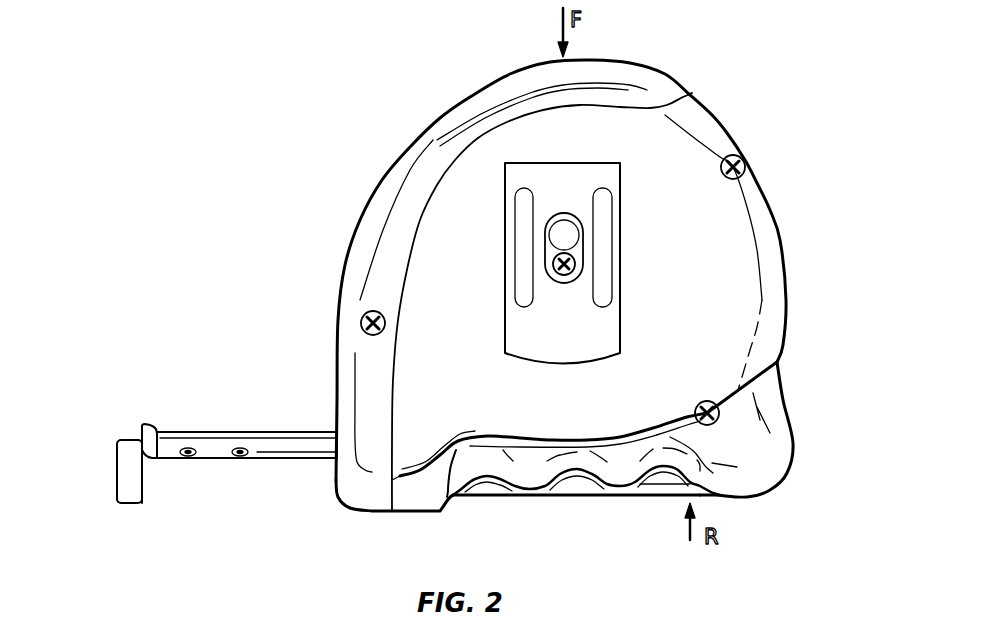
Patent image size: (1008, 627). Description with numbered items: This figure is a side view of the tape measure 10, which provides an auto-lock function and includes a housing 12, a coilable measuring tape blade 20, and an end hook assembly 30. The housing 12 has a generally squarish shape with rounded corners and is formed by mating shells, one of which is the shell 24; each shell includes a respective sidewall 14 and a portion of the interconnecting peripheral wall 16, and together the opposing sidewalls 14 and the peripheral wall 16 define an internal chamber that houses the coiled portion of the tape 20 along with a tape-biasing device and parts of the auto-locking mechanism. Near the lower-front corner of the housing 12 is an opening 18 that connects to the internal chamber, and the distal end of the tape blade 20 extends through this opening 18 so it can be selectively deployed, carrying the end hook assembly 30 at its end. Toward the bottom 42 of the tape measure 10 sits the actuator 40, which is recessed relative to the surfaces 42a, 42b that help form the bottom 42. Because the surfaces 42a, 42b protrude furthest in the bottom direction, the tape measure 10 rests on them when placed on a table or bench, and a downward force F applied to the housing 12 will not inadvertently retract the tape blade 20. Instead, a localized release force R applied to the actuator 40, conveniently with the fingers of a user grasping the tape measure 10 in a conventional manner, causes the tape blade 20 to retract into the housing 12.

The tape measure 10 is at (582, 283).
The housing 12 is at (680, 158).
The sidewall 14 is at (465, 178).
The interconnecting peripheral wall 16 is at (380, 178).
The opening 18 is at (325, 469).
The coilable measuring tape blade 20 is at (227, 472).
The mating shell 24 is at (733, 308).
The end hook assembly 30 is at (149, 520).
The actuator 40 is at (582, 462).
The bottom 42 is at (610, 510).
The surface 42a is at (417, 512).
The surface 42b is at (738, 500).